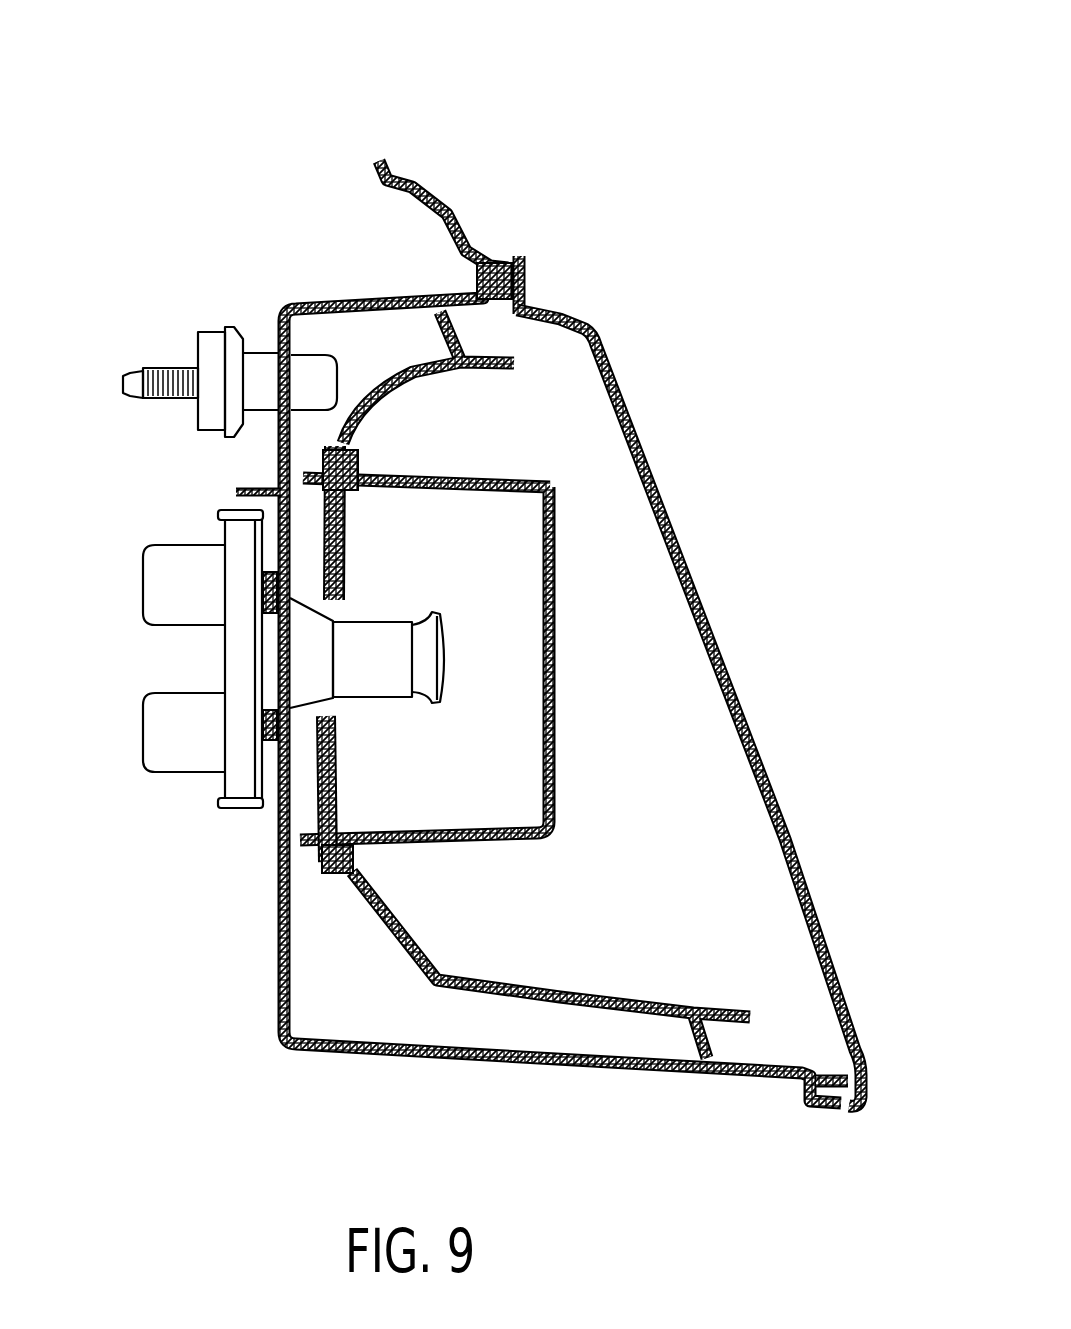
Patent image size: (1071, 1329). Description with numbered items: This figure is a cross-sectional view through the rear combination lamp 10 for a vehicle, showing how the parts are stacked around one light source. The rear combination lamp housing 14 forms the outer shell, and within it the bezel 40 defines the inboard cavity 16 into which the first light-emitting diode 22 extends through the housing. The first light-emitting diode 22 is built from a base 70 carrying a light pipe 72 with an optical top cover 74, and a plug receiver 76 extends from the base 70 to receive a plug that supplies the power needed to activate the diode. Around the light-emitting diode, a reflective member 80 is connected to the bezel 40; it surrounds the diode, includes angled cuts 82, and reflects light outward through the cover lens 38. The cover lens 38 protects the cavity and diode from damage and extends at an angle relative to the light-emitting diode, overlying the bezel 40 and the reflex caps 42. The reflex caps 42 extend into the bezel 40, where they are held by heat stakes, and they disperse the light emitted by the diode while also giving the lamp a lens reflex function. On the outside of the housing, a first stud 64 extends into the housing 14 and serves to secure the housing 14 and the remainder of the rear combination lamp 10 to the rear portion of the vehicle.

The rear combination lamp 10 is at (789, 120).
The rear combination lamp housing 14 is at (318, 300).
The inboard cavity 16 is at (487, 762).
The first light-emitting diode 22 is at (190, 545).
The cover lens 38 is at (763, 747).
The bezel 40 is at (397, 372).
The reflex cap 42 is at (560, 660).
The first stud 64 is at (163, 372).
The base 70 is at (230, 510).
The light pipe 72 is at (375, 677).
The optical top cover 74 is at (447, 660).
The plug receiver 76 is at (240, 807).
The reflective member 80 is at (345, 527).
The angled cuts 82 is at (335, 787).